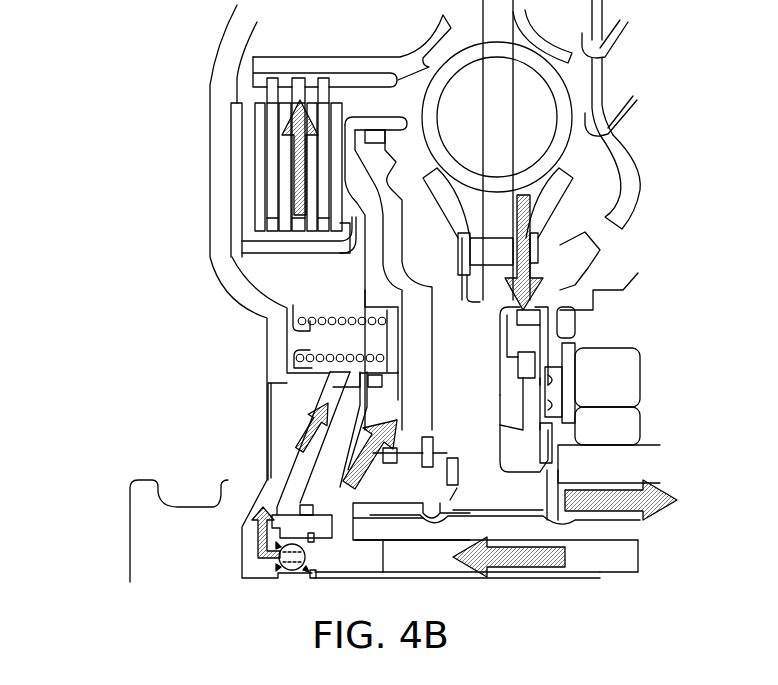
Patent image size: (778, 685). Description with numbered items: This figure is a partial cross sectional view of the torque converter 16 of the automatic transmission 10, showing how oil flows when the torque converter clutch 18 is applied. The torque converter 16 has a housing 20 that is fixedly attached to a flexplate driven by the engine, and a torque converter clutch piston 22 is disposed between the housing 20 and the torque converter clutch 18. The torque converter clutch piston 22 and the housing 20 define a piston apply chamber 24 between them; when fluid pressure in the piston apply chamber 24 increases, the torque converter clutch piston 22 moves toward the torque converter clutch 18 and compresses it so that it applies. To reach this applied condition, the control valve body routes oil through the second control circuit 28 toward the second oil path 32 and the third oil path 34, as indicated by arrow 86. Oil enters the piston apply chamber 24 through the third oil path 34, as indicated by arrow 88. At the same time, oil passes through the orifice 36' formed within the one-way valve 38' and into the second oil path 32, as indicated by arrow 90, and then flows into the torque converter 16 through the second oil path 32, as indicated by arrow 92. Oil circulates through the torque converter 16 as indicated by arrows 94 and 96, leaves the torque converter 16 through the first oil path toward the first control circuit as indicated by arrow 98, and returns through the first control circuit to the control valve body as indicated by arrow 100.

The automatic transmission 10 is at (126, 327).
The torque converter 16 is at (210, 84).
The housing 20 is at (232, 40).
The torque converter clutch piston 22 is at (385, 271).
The torque converter clutch 18 is at (268, 143).
The arrow 94 is at (297, 180).
The piston apply chamber 24 is at (405, 353).
The arrow 96 is at (588, 235).
The arrow 92 is at (302, 433).
The second oil path 32 is at (283, 478).
The third oil path 34 is at (343, 502).
The arrow 88 is at (372, 462).
The arrow 90 is at (257, 538).
The orifice 36' is at (317, 570).
The one-way valve 38' is at (278, 576).
The second control circuit 28 is at (621, 556).
The arrow 86 is at (519, 560).
The arrow 98 is at (615, 495).
The arrow 100 is at (621, 500).